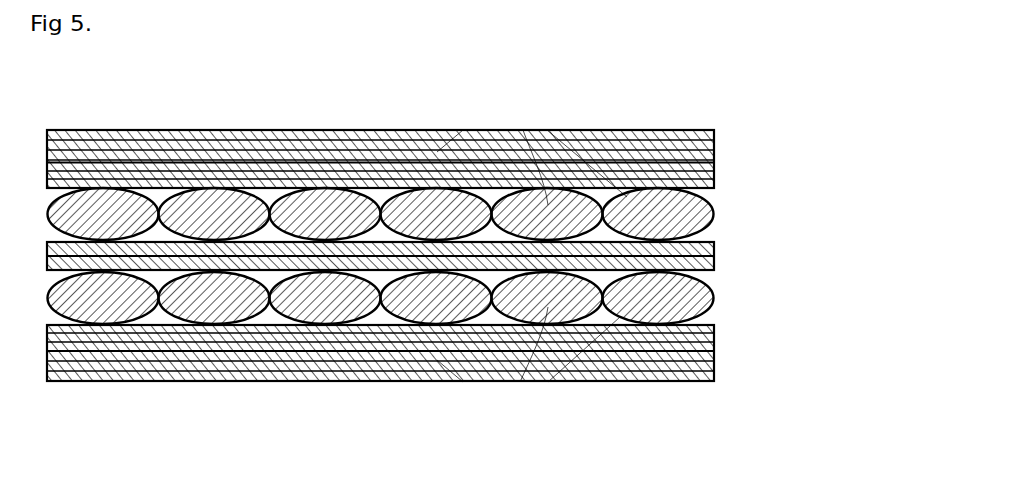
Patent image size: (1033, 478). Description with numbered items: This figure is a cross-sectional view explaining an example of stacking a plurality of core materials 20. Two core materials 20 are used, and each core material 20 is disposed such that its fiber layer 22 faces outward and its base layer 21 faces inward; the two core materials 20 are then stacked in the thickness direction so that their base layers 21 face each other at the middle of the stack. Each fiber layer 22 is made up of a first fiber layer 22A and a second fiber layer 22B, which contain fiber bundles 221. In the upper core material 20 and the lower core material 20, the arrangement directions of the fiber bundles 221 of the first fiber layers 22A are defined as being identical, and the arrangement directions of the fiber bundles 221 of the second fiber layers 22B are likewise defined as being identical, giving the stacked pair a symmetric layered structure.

The core material 20 is at (493, 252).
The base layer 21 is at (465, 253).
The fiber layer 22 is at (464, 252).
The first fiber layer 22A is at (723, 212).
The second fiber layer 22B is at (723, 158).
The fiber bundle 221 is at (547, 130).